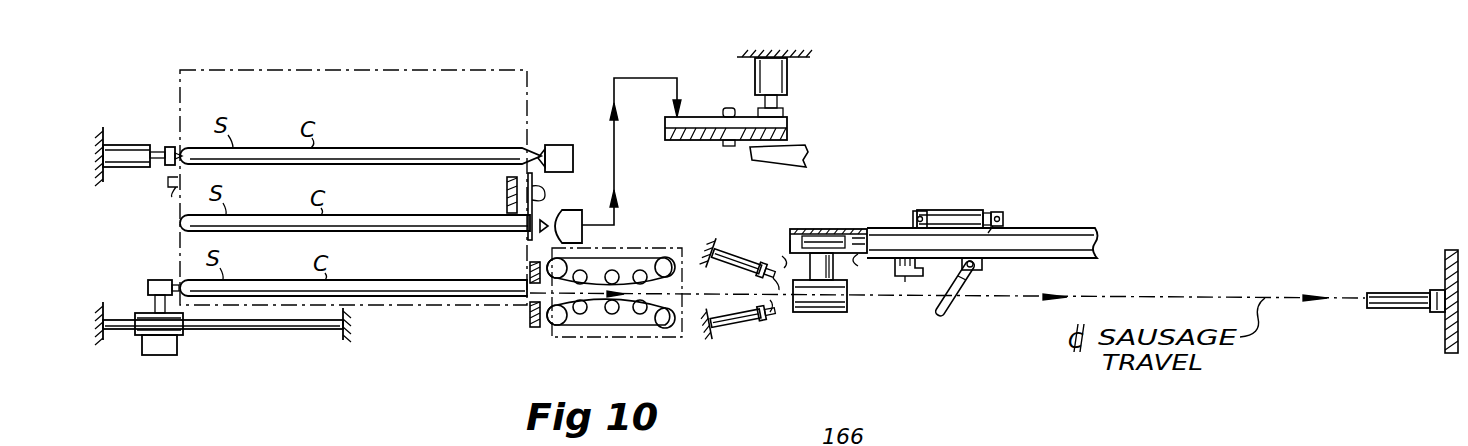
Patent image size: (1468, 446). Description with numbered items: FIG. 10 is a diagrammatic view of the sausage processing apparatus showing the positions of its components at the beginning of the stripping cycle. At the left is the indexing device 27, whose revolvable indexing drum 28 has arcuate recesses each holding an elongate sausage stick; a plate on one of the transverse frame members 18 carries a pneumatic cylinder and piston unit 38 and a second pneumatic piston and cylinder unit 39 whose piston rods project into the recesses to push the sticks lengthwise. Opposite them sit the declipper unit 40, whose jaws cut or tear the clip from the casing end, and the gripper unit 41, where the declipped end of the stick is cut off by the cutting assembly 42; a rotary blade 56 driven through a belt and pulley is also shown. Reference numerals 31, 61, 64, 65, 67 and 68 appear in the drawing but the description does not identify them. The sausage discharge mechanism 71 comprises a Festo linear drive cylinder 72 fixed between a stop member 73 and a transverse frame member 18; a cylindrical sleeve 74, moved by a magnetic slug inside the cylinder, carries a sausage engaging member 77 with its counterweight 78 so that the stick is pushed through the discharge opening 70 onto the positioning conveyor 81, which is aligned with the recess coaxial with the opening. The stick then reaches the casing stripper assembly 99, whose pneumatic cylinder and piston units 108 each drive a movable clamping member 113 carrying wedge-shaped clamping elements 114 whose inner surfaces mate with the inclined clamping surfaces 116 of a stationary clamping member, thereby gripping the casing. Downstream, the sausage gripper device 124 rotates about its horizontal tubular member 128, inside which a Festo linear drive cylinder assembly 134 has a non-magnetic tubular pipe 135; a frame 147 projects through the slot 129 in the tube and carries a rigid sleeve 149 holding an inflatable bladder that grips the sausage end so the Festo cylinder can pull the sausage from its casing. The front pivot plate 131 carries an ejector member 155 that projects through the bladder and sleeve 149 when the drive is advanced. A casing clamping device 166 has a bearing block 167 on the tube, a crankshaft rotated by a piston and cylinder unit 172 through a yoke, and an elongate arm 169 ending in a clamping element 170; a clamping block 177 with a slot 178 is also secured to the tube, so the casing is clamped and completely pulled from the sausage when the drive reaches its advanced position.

The indexing device 27 is at (154, 67).
The indexing drum 28 is at (539, 63).
The pneumatic cylinder and piston unit 38 is at (136, 132).
The second pneumatic piston and cylinder unit 39 is at (135, 130).
The latch 31 is at (178, 190).
The rotary blade 56 is at (527, 188).
The declipper unit 40 is at (562, 128).
The gripper unit 41 is at (576, 203).
The cutting assembly 42 is at (491, 190).
The discharge opening 70 is at (533, 298).
The positioning conveyor 81 is at (575, 350).
The sausage discharge mechanism 71 is at (126, 363).
The transverse frame member 18 is at (105, 328).
The Festo linear drive cylinder 72 is at (265, 342).
The stop member 73 is at (343, 340).
The cylindrical sleeve 74 is at (183, 330).
The sausage engaging member 77 is at (149, 281).
The counterweight 78 is at (162, 355).
The cutting station 61 is at (820, 92).
The cutter cylinder 67 is at (740, 72).
The cutter piston rod 68 is at (785, 111).
The cutter bar 65 is at (790, 124).
The knife blade 64 is at (685, 141).
The sausage gripper device 124 is at (861, 212).
The Festo linear drive cylinder assembly 134 is at (803, 215).
The tubular pipe 135 is at (795, 248).
The movable clamping member 113 is at (788, 274).
The slot 129 is at (856, 254).
The frame 147 is at (848, 280).
The rigid sleeve 149 is at (833, 312).
The pneumatic cylinder and piston unit 108 is at (729, 241).
The wedge-shaped clamping elements 114 is at (785, 292).
The inclined clamping surfaces 116 is at (773, 278).
The casing stripper assembly 99 is at (758, 354).
The tubular member 128 is at (1044, 228).
The casing clamping device 166 is at (958, 183).
The piston and cylinder unit 172 is at (985, 196).
The clamping block 177 is at (905, 278).
The slot 178 is at (912, 278).
The clamping element 170 is at (950, 318).
The bearing block 167 is at (982, 266).
The elongate arm 169 is at (960, 285).
The front pivot plate 131 is at (1432, 342).
The sausage engaging ejector member 155 is at (1378, 293).